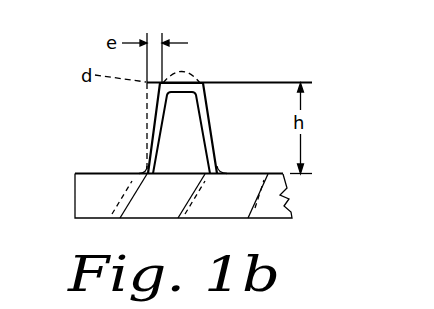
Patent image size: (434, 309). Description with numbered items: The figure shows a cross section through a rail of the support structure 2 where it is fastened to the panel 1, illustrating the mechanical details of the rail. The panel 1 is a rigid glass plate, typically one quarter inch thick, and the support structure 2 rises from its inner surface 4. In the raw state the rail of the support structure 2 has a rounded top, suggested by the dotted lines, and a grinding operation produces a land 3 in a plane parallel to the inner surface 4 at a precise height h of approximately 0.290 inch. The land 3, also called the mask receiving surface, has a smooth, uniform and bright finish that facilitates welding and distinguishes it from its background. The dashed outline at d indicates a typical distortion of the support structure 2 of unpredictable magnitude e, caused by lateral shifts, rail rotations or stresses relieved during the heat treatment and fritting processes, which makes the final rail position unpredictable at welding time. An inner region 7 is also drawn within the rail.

The panel 1 is at (75, 193).
The support structure 2 is at (146, 112).
The land 3 is at (203, 83).
The inner surface 4 is at (100, 172).
The core region 7 is at (183, 132).